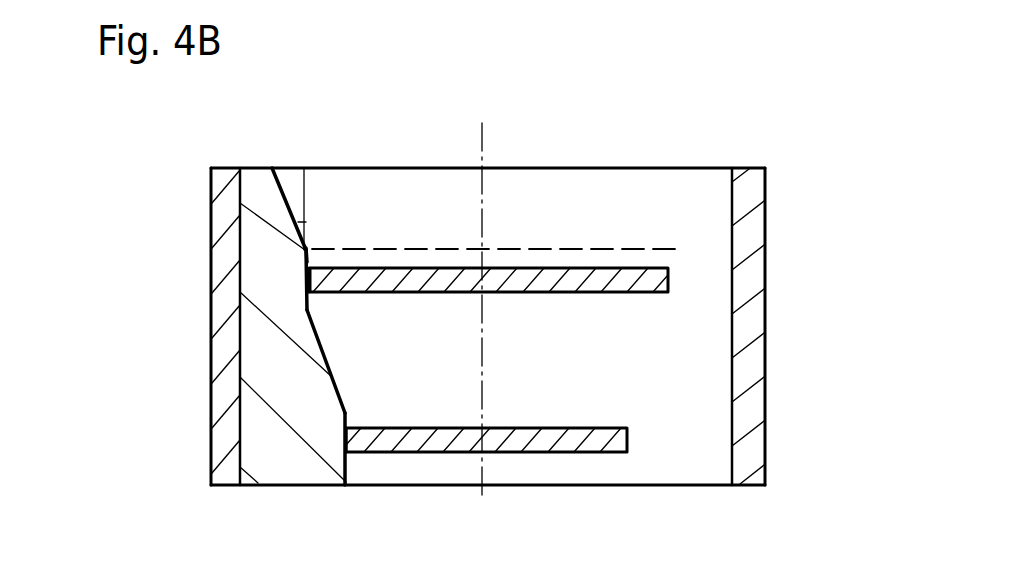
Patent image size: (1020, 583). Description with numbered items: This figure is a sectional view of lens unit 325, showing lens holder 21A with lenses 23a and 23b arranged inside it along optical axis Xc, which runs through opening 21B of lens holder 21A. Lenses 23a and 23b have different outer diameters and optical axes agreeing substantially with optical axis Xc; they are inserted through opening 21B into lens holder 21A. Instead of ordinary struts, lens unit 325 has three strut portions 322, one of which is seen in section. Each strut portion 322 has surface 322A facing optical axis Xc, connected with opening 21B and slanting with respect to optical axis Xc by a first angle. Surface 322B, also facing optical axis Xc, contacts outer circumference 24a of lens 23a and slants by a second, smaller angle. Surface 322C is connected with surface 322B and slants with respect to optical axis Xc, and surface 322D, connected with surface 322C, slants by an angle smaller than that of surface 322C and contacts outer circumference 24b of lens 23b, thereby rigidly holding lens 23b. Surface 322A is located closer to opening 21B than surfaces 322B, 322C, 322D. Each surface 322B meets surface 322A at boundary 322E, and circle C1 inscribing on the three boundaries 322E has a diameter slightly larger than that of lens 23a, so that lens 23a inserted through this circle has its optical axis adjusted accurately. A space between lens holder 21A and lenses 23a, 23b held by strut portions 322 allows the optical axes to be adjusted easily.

The lens unit 325 is at (760, 156).
The lens holder 21A is at (750, 477).
The opening 21B is at (643, 168).
The strut portion 322 is at (277, 467).
The surface 322A is at (281, 194).
The surface 322B is at (307, 281).
The surface 322C is at (327, 353).
The surface 322D is at (345, 420).
The boundary 322E is at (316, 250).
The outer circumference 24a is at (307, 283).
The outer circumference 24b is at (347, 446).
The lens 23a is at (470, 268).
The lens 23b is at (541, 428).
The optical axis Xc is at (483, 148).
The circle C1 is at (632, 249).